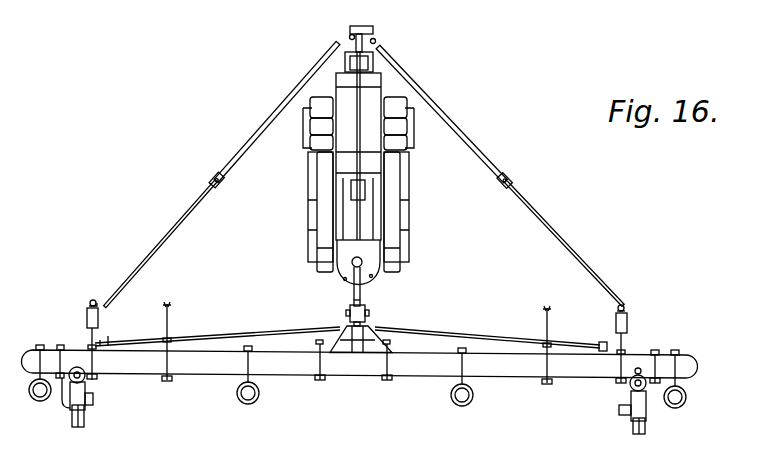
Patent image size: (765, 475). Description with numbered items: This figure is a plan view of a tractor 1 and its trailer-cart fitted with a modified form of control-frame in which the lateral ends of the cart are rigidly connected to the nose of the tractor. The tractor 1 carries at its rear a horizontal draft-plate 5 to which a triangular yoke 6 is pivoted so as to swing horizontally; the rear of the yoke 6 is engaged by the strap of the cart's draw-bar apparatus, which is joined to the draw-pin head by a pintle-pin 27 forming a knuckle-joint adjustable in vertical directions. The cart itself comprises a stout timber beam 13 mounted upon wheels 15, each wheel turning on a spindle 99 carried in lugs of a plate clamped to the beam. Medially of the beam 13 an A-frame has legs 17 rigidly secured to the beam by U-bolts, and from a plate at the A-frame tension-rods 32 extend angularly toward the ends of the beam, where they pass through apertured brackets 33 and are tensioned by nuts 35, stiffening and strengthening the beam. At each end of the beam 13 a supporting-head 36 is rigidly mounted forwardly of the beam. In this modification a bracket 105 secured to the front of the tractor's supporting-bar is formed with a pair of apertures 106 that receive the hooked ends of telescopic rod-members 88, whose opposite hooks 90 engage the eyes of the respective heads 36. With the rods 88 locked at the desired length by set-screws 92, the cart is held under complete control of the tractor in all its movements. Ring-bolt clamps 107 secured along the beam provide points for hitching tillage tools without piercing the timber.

The tractor 1 is at (407, 191).
The draft-plate 5 is at (371, 279).
The triangular yoke 6 is at (362, 290).
The beam 13 is at (360, 361).
The wheels 15 is at (638, 428).
The legs 17 is at (171, 304).
The pintle-pin 27 is at (348, 310).
The tension-rods 32 is at (231, 335).
The apertured brackets 33 is at (600, 346).
The nuts 35 is at (604, 342).
The supporting-head 36 is at (87, 316).
The telescopic rod-members 88 is at (274, 113).
The hooks 90 is at (90, 301).
The set-screw 92 is at (224, 180).
The spindle 99 is at (632, 389).
The bracket 105 is at (374, 30).
The apertures 106 is at (350, 34).
The ring-bolt clamps 107 is at (247, 403).